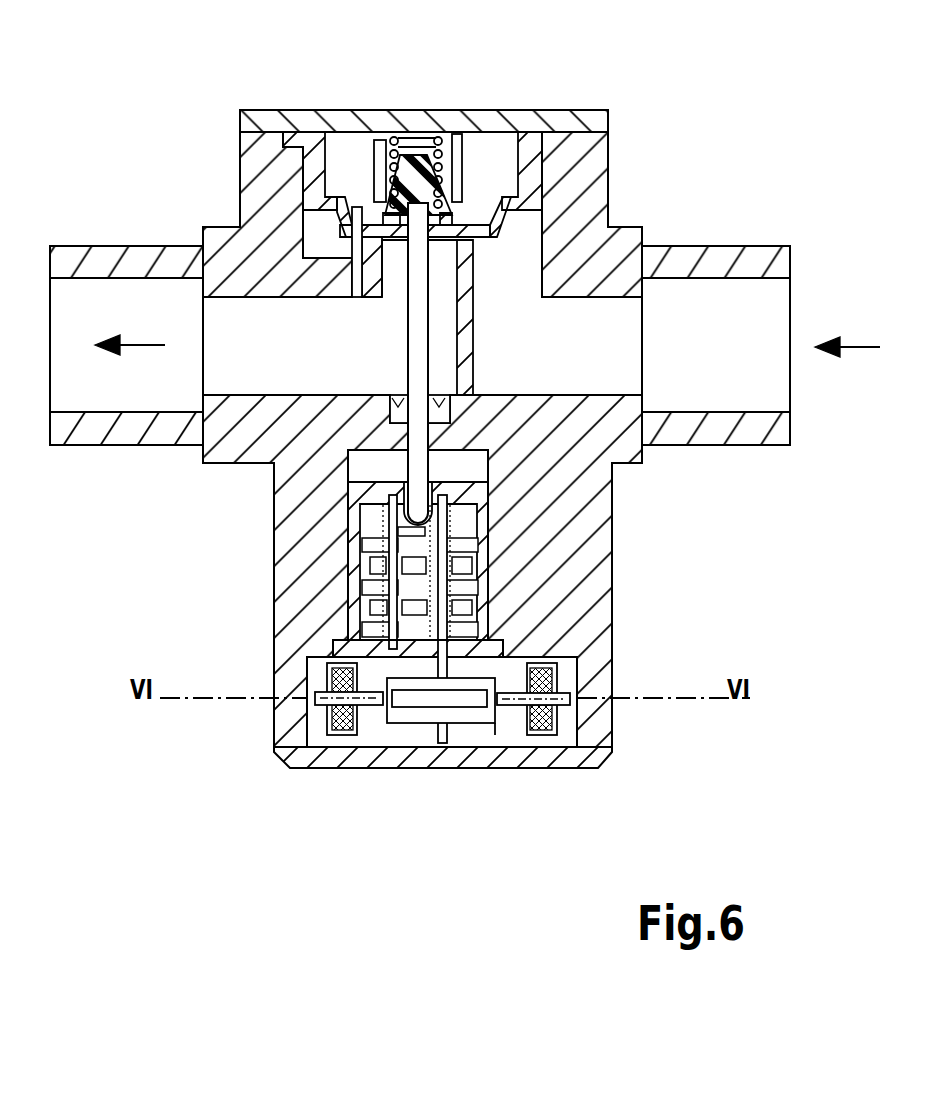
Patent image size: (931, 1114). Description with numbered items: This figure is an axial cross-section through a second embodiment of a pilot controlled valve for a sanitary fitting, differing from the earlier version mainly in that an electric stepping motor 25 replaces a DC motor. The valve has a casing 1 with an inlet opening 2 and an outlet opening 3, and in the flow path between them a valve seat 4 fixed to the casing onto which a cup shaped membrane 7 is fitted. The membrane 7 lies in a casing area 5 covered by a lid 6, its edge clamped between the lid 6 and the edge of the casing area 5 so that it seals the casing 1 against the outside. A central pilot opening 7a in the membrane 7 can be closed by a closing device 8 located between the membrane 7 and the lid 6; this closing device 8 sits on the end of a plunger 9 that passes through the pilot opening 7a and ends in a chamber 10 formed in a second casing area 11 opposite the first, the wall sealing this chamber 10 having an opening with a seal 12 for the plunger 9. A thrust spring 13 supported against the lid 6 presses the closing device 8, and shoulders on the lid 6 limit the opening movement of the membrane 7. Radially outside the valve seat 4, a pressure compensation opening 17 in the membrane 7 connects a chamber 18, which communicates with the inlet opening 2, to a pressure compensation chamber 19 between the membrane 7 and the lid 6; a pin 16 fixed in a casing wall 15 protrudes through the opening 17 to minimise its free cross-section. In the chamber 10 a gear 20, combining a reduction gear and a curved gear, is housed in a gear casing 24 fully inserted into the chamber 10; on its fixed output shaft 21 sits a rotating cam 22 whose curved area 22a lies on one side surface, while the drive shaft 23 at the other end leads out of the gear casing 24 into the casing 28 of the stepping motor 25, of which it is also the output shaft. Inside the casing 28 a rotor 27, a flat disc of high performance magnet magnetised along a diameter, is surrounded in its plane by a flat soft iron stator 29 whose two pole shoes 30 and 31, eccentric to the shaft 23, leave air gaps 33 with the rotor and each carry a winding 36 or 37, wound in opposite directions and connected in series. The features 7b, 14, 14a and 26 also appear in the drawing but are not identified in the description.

The casing 1 is at (623, 250).
The inlet opening 2 is at (722, 298).
The outlet opening 3 is at (133, 293).
The valve seat 4 is at (383, 258).
The casing area 5 is at (593, 157).
The lid 6 is at (583, 120).
The membrane 7 is at (515, 225).
The pilot opening 7a is at (505, 200).
The diaphragm lip 7b is at (335, 205).
The closing device 8 is at (445, 140).
The plunger 9 is at (415, 380).
The chamber 10 is at (477, 468).
The second casing area 11 is at (565, 583).
The seal 12 is at (440, 417).
The thrust spring 13 is at (400, 150).
The valve member 14 is at (395, 160).
The valve member flange 14a is at (390, 195).
The casing wall 15 is at (278, 285).
The pin 16 is at (440, 258).
The pressure compensation opening 17 is at (330, 238).
The chamber 18 is at (322, 245).
The pressure compensation chamber 19 is at (347, 168).
The gear 20 is at (350, 570).
The output shaft 21 is at (389, 495).
The cam 22 is at (486, 505).
The curved area 22a is at (467, 525).
The drive shaft 23 is at (447, 652).
The gear casing 24 is at (368, 612).
The electric stepping motor 25 is at (365, 752).
The cover plate 26 is at (575, 762).
The rotor 27 is at (420, 703).
The casing 28 is at (505, 735).
The stator 29 is at (317, 702).
The pole shoe 30 is at (337, 650).
The pole shoe 31 is at (560, 747).
The air gap 33 is at (493, 713).
The winding 36 is at (373, 732).
The winding 37 is at (553, 710).